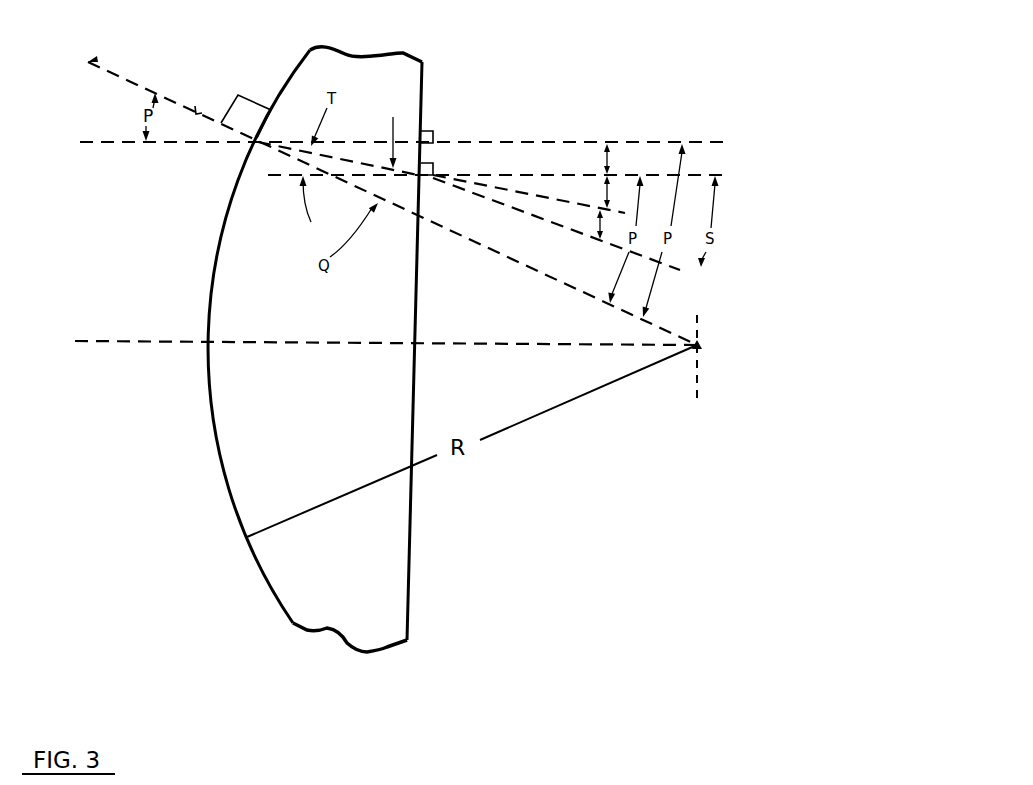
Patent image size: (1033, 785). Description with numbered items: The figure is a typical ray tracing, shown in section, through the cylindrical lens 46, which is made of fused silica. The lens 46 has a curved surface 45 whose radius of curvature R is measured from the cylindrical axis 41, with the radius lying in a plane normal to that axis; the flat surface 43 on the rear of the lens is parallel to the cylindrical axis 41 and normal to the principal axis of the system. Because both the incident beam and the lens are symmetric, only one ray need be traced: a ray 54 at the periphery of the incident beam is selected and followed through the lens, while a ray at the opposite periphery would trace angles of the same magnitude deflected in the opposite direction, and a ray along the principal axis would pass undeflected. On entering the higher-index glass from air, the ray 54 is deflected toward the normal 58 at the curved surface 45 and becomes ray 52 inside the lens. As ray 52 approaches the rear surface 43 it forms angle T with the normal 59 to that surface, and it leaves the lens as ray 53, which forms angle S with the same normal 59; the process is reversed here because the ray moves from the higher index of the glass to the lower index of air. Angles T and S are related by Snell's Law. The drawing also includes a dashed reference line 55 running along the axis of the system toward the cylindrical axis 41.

The cylindrical axis 41 is at (707, 356).
The flat surface 43 is at (414, 512).
The curved surface 45 is at (252, 558).
The cylindrical lens 46 is at (342, 574).
The ray inside the lens 52 is at (366, 165).
The exiting ray 53 is at (487, 198).
The peripheral incident ray 54 is at (640, 143).
The optical axis line 55 is at (116, 341).
The normal to the curved surface 58 is at (92, 56).
The normal ray at the flat surface 59 is at (692, 176).